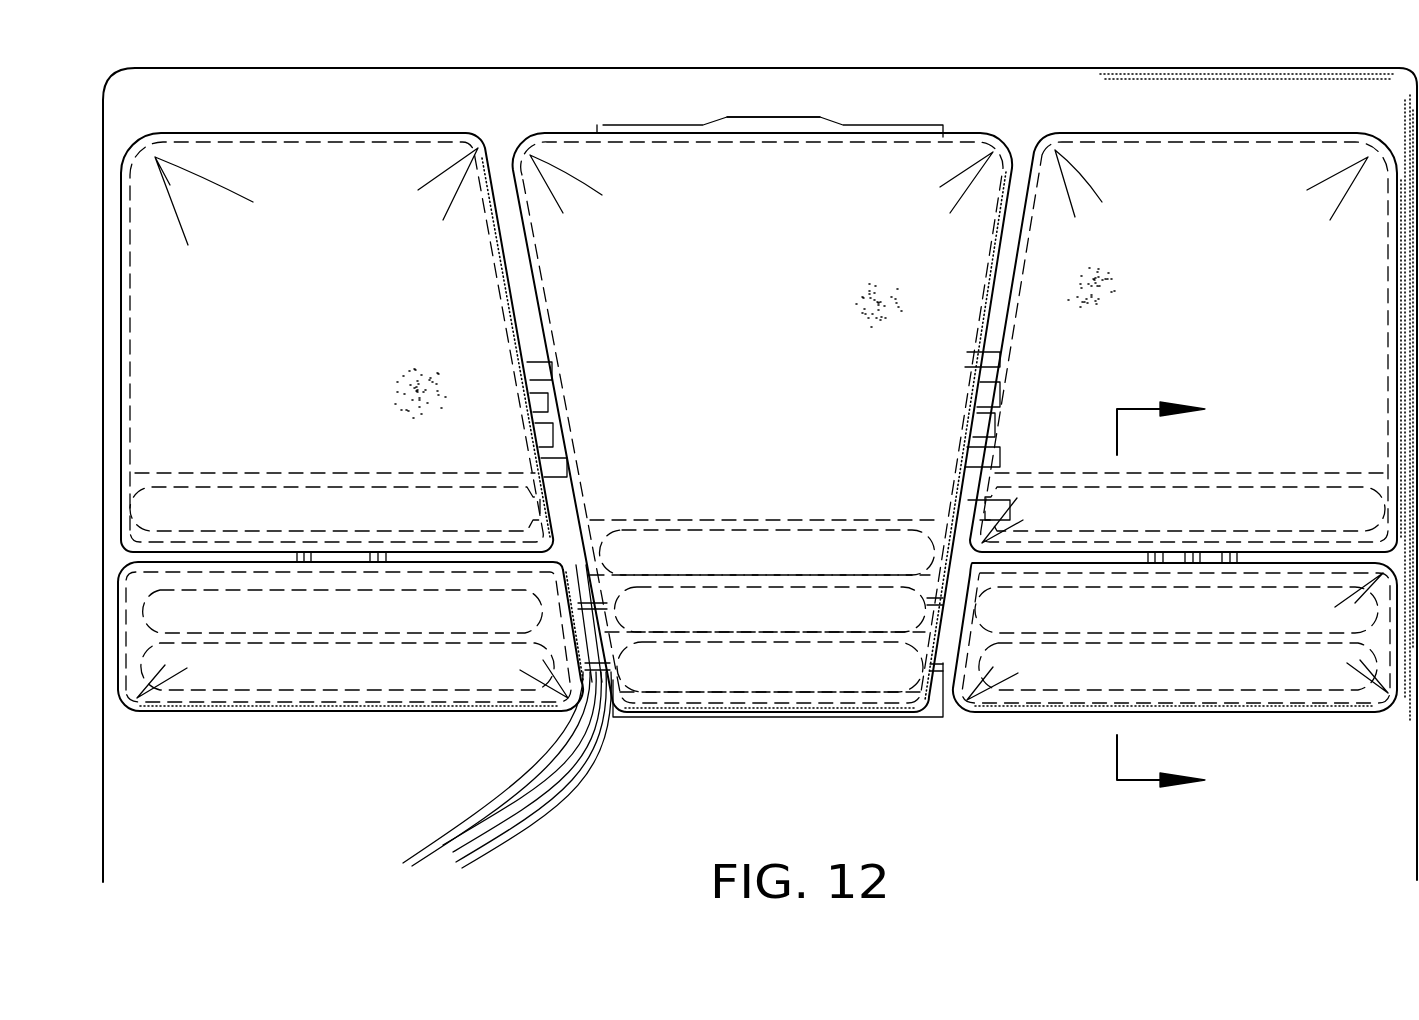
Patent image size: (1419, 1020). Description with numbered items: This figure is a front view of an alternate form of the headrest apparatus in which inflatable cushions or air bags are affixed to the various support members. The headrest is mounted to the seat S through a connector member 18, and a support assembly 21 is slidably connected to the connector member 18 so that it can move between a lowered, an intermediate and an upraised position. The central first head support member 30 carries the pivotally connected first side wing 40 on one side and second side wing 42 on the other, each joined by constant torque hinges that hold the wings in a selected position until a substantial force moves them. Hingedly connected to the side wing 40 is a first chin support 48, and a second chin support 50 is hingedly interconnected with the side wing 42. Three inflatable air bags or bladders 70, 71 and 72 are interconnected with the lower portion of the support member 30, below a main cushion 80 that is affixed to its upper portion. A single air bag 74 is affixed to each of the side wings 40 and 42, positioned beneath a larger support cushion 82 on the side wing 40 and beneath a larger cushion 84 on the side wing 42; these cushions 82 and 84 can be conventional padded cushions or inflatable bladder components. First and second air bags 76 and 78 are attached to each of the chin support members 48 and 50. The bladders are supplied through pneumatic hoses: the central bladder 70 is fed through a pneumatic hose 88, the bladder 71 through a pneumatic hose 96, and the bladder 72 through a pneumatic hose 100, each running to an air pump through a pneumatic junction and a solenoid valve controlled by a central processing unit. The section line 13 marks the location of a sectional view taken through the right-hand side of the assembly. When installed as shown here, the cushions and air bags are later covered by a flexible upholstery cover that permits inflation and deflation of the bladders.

The seat S is at (998, 86).
The connector member 18 is at (645, 128).
The support assembly 21 is at (772, 125).
The first head support member 30 is at (580, 140).
The first side wing 40 is at (297, 135).
The second side wing 42 is at (1199, 142).
The first chin support 48 is at (458, 712).
The second chin support 50 is at (1053, 716).
The central air bag 70 is at (658, 545).
The air bag 71 is at (720, 612).
The air bag 72 is at (829, 660).
The air bag 74 is at (223, 508).
The first air bag 76 is at (213, 615).
The second air bag 78 is at (300, 670).
The main cushion 80 is at (713, 344).
The support cushion 82 is at (273, 333).
The cushion 84 is at (1248, 344).
The pneumatic hose 88 is at (432, 830).
The pneumatic hose 96 is at (565, 775).
The pneumatic hose 100 is at (518, 833).
The section line 13- 13 is at (1138, 601).